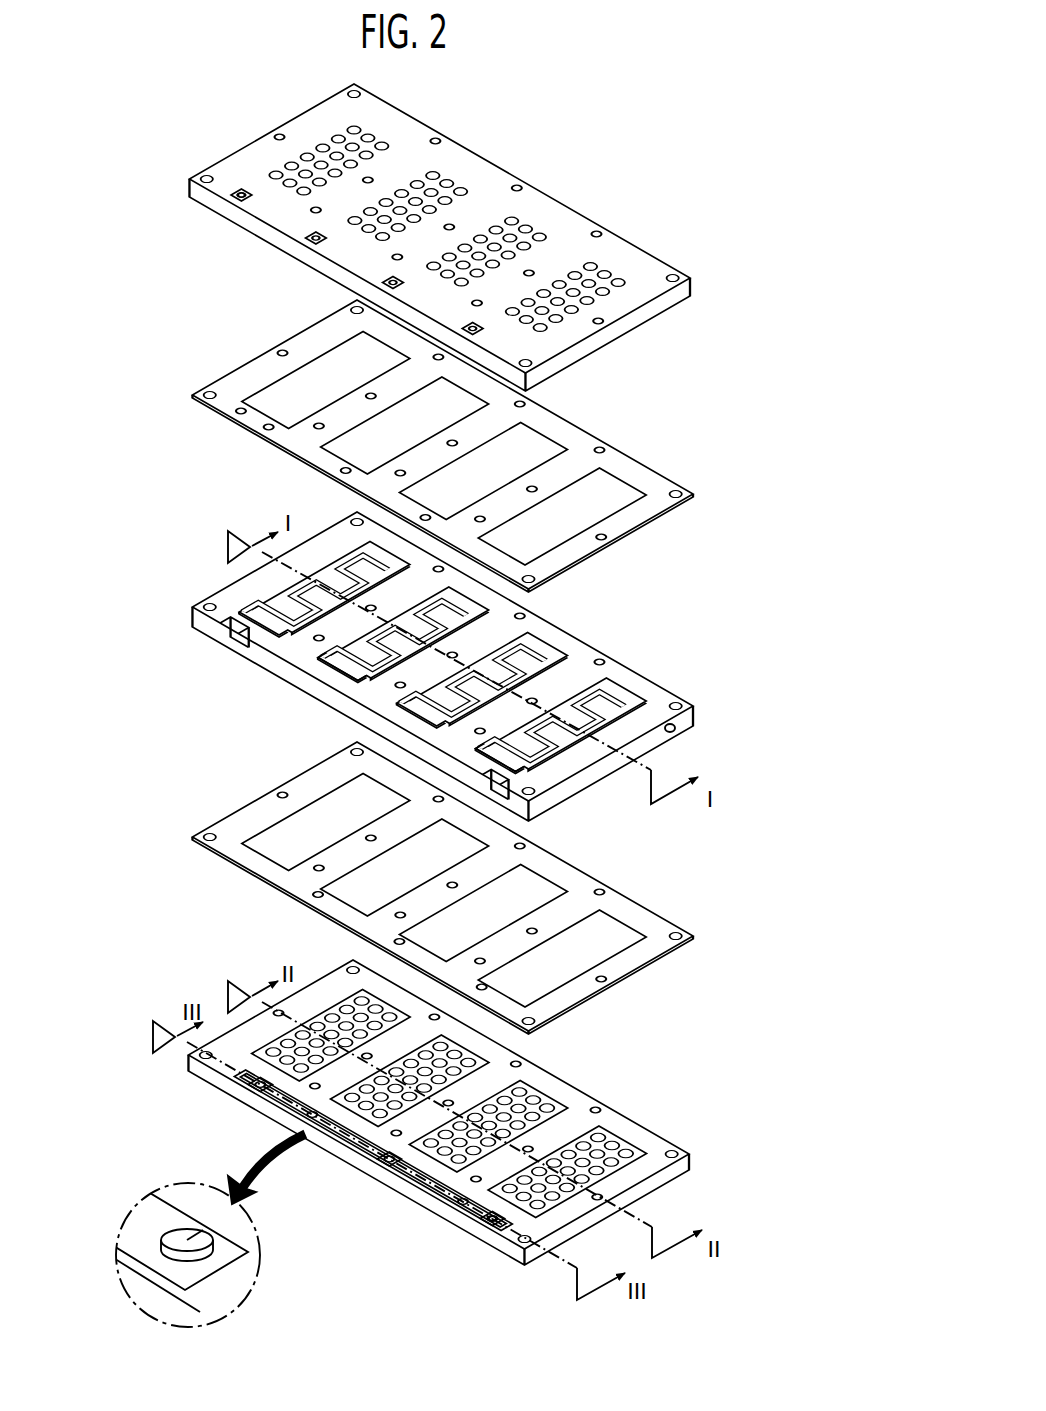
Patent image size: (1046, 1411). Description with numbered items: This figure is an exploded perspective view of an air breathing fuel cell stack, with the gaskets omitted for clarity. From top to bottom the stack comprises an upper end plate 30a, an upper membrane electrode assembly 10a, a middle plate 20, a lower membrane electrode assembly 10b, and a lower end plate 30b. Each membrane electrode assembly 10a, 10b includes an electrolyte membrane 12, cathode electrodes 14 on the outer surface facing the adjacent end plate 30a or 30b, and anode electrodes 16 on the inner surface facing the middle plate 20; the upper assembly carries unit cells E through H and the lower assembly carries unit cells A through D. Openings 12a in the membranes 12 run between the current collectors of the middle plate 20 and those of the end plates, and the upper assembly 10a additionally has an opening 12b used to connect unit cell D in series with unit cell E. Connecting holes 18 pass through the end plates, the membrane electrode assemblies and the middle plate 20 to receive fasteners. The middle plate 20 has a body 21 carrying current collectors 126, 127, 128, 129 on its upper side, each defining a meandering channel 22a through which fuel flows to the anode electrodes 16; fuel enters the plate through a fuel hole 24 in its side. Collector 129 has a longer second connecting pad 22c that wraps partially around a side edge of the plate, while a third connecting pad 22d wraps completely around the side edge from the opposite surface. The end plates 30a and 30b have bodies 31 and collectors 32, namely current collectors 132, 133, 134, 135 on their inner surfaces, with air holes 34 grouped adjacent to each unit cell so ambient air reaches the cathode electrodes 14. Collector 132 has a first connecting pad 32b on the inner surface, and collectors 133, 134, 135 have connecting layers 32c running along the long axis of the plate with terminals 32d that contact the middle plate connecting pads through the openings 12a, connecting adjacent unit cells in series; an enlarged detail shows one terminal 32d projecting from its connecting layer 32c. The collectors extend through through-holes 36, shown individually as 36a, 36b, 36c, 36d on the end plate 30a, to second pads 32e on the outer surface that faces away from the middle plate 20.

The membrane electrode assembly 10a is at (683, 467).
The membrane electrode assembly 10b is at (685, 907).
The electrolyte membrane 12 is at (583, 447).
The opening 12a is at (266, 430).
The opening 12b is at (238, 412).
The cathode electrode 14 is at (610, 483).
The anode electrode 16 is at (610, 927).
The connecting hole 18 is at (690, 272).
The middle plate 20 is at (685, 667).
The body 21 is at (580, 635).
The channel 22a is at (332, 680).
The second connecting pad 22c is at (504, 792).
The third connecting pad 22d is at (218, 628).
The fuel hole 24 is at (675, 738).
The current collector 126 is at (265, 600).
The current collector 127 is at (335, 658).
The current collector 128 is at (540, 648).
The current collector 129 is at (598, 690).
The end plate 30a is at (677, 247).
The end plate 30b is at (690, 1135).
The body 31 is at (494, 176).
The collector 32 is at (614, 1121).
The first connecting pad 32b is at (502, 1227).
The connecting layer 32c is at (243, 1104).
The terminal 32d is at (310, 1118).
The second pad 32e is at (236, 200).
The air hole 34 is at (528, 215).
The through hole 36 is at (258, 1082).
The terminal pad 36a is at (240, 203).
The terminal pad 36b is at (312, 243).
The terminal pad 36c is at (392, 286).
The terminal pad 36d is at (535, 350).
The current collector 132 is at (640, 1188).
The current collector 133 is at (555, 1105).
The current collector 134 is at (490, 1075).
The current collector 135 is at (368, 990).